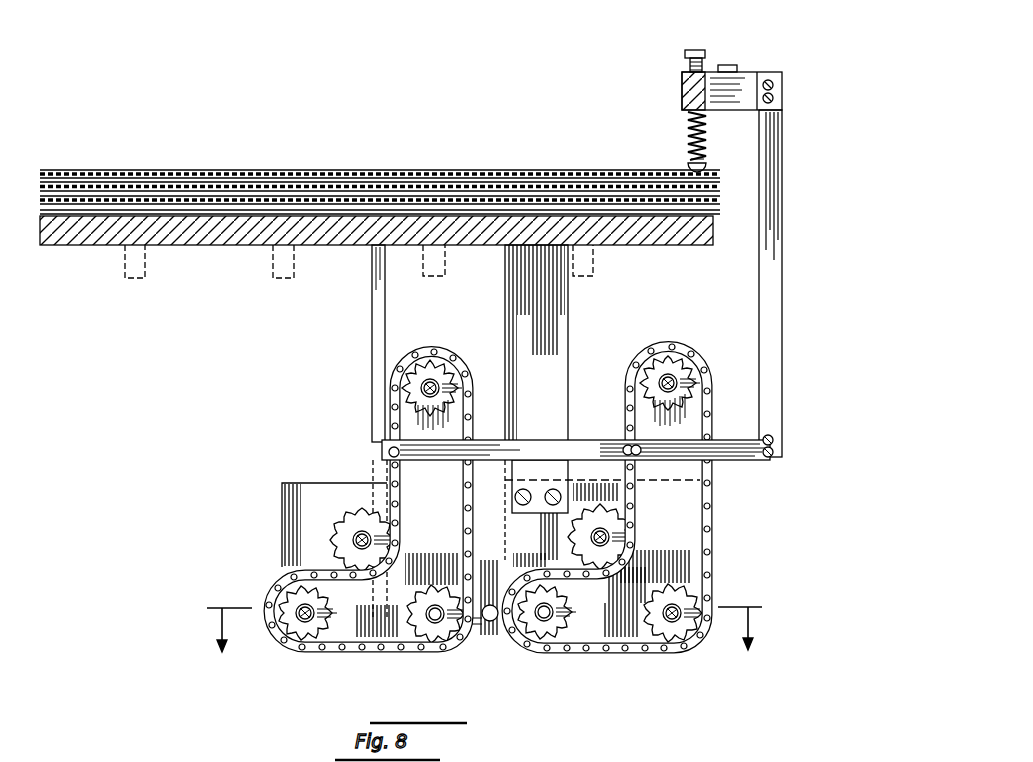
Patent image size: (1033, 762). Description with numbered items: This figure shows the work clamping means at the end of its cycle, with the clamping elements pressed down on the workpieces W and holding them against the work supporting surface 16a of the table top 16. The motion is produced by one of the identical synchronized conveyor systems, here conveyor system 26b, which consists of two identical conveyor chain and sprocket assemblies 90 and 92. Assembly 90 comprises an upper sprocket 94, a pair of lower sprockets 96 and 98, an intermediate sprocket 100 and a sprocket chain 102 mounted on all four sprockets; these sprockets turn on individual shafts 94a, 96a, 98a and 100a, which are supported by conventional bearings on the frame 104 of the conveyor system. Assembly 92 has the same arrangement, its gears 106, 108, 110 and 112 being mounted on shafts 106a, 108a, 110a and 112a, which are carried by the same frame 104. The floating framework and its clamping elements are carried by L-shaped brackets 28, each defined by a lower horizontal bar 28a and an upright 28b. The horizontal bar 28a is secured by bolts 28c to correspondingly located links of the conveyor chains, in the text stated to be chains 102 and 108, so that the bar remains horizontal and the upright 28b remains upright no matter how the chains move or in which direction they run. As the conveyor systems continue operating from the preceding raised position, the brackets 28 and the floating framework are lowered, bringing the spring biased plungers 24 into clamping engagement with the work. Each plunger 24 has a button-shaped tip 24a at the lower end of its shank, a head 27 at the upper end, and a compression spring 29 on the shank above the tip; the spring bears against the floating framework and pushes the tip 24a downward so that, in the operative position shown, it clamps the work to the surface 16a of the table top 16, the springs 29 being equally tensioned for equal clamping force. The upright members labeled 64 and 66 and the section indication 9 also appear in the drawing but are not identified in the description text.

The workpieces W is at (505, 213).
The table top 16 is at (700, 246).
The work supporting surface 16a is at (216, 242).
The spring biased plungers 24 is at (705, 63).
The button-shaped tip 24a is at (690, 164).
The head 27 is at (696, 50).
The compression spring 29 is at (689, 129).
The brackets 28 is at (790, 448).
The lower horizontal bar 28a is at (550, 440).
The upright 28b is at (783, 251).
The bolts 28c is at (388, 453).
The support post 64 is at (372, 324).
The support column 66 is at (570, 314).
The conveyor chain and sprocket assembly 90 is at (388, 413).
The chain and sprocket assembly 92 is at (713, 414).
The upper sprocket 94 is at (428, 365).
The shaft 94a is at (441, 383).
The gear 106 is at (665, 365).
The shaft 106a is at (679, 378).
The intermediate sprocket 100 is at (328, 531).
The shaft 100a is at (364, 532).
The frame 104 is at (300, 498).
The conveyor system 26b is at (276, 572).
The gear 112 is at (570, 521).
The shaft 112a is at (606, 534).
The lower sprocket 96 is at (310, 636).
The shaft 96a is at (322, 622).
The lower sprocket 98 is at (432, 637).
The shaft 98a is at (443, 622).
The sprocket chain 102 is at (282, 641).
The gear 108 is at (538, 641).
The shaft 108a is at (549, 620).
The gear 110 is at (656, 627).
The shaft 110a is at (680, 621).
The section line 9- 9 is at (484, 649).